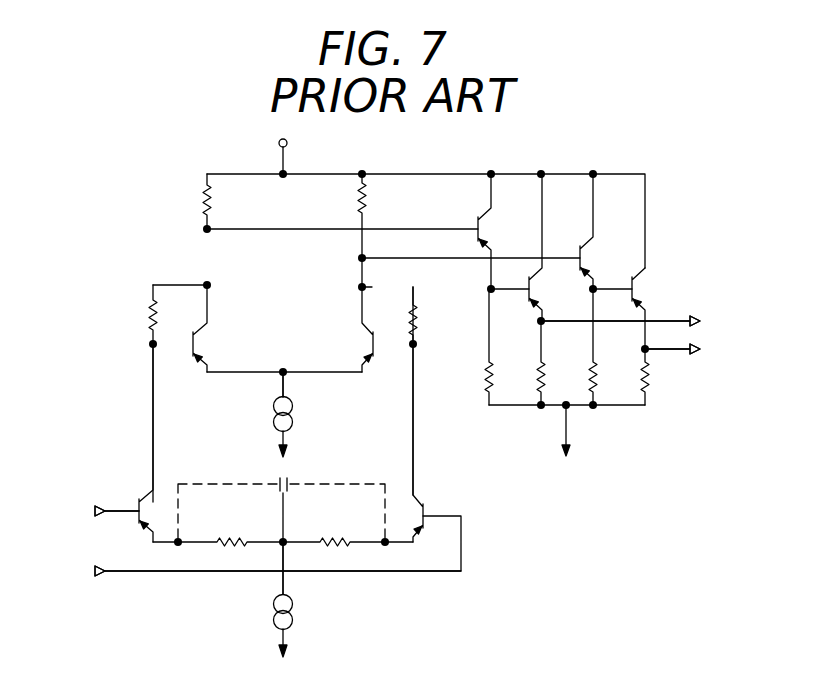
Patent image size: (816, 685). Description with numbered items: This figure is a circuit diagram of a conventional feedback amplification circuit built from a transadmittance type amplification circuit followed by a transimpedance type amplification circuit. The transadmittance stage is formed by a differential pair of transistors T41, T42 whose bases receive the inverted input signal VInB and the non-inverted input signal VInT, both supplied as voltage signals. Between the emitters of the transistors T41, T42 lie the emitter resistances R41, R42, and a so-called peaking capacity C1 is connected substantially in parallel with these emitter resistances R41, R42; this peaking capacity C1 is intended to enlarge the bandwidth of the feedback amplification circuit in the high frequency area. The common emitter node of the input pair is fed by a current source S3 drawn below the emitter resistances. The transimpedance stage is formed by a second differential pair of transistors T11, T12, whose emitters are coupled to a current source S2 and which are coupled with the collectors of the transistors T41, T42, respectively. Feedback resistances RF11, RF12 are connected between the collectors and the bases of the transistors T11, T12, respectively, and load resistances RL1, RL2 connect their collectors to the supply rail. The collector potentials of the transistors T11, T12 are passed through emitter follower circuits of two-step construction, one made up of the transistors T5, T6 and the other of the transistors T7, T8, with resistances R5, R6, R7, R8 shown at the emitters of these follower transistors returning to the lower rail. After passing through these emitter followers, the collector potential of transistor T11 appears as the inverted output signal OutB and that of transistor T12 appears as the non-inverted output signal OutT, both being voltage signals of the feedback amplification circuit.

The load resistor RL1 is at (182, 201).
The load resistor RL2 is at (386, 230).
The feedback resistance RF11 is at (124, 314).
The feedback resistance RF12 is at (439, 315).
The transistor T5 is at (499, 231).
The transistor T6 is at (549, 247).
The transistor T7 is at (601, 231).
The transistor T8 is at (653, 308).
The transistor T11 is at (217, 328).
The transistor T12 is at (346, 329).
The transistor T41 is at (131, 443).
The transistor T42 is at (436, 443).
The resistor R5 is at (503, 347).
The resistor R6 is at (555, 363).
The resistor R7 is at (607, 347).
The resistor R8 is at (659, 377).
The emitter resistance R41 is at (230, 528).
The emitter resistance R42 is at (334, 528).
The peaking capacity C1 is at (283, 502).
The current source S2 is at (299, 414).
The current source S3 is at (299, 599).
The inverted output signal OutB is at (654, 322).
The non-inverted output signal OutT is at (704, 350).
The inverted input signal VInB is at (83, 512).
The non-inverted input signal VInT is at (244, 569).